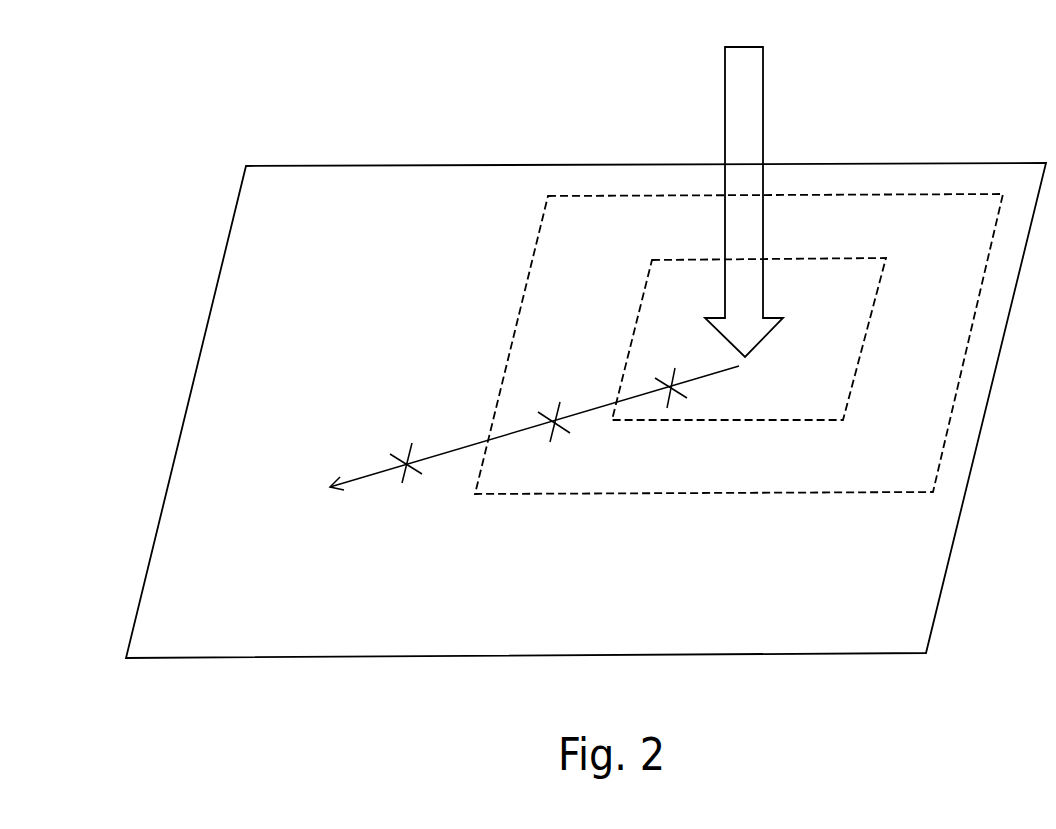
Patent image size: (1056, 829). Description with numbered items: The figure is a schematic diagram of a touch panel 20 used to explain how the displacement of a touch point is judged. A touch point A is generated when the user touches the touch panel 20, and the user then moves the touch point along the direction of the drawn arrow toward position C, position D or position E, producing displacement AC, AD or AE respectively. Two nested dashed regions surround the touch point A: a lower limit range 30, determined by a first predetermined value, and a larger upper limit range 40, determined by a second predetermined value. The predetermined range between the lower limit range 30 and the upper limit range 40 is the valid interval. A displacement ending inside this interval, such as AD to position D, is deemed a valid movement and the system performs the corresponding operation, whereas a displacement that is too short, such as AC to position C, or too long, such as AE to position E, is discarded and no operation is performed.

The touch panel 20 is at (336, 165).
The lower limit range 30 is at (635, 315).
The upper limit range 40 is at (528, 270).
The touch point A is at (763, 378).
The position C is at (671, 375).
The position D is at (554, 409).
The position E is at (403, 451).